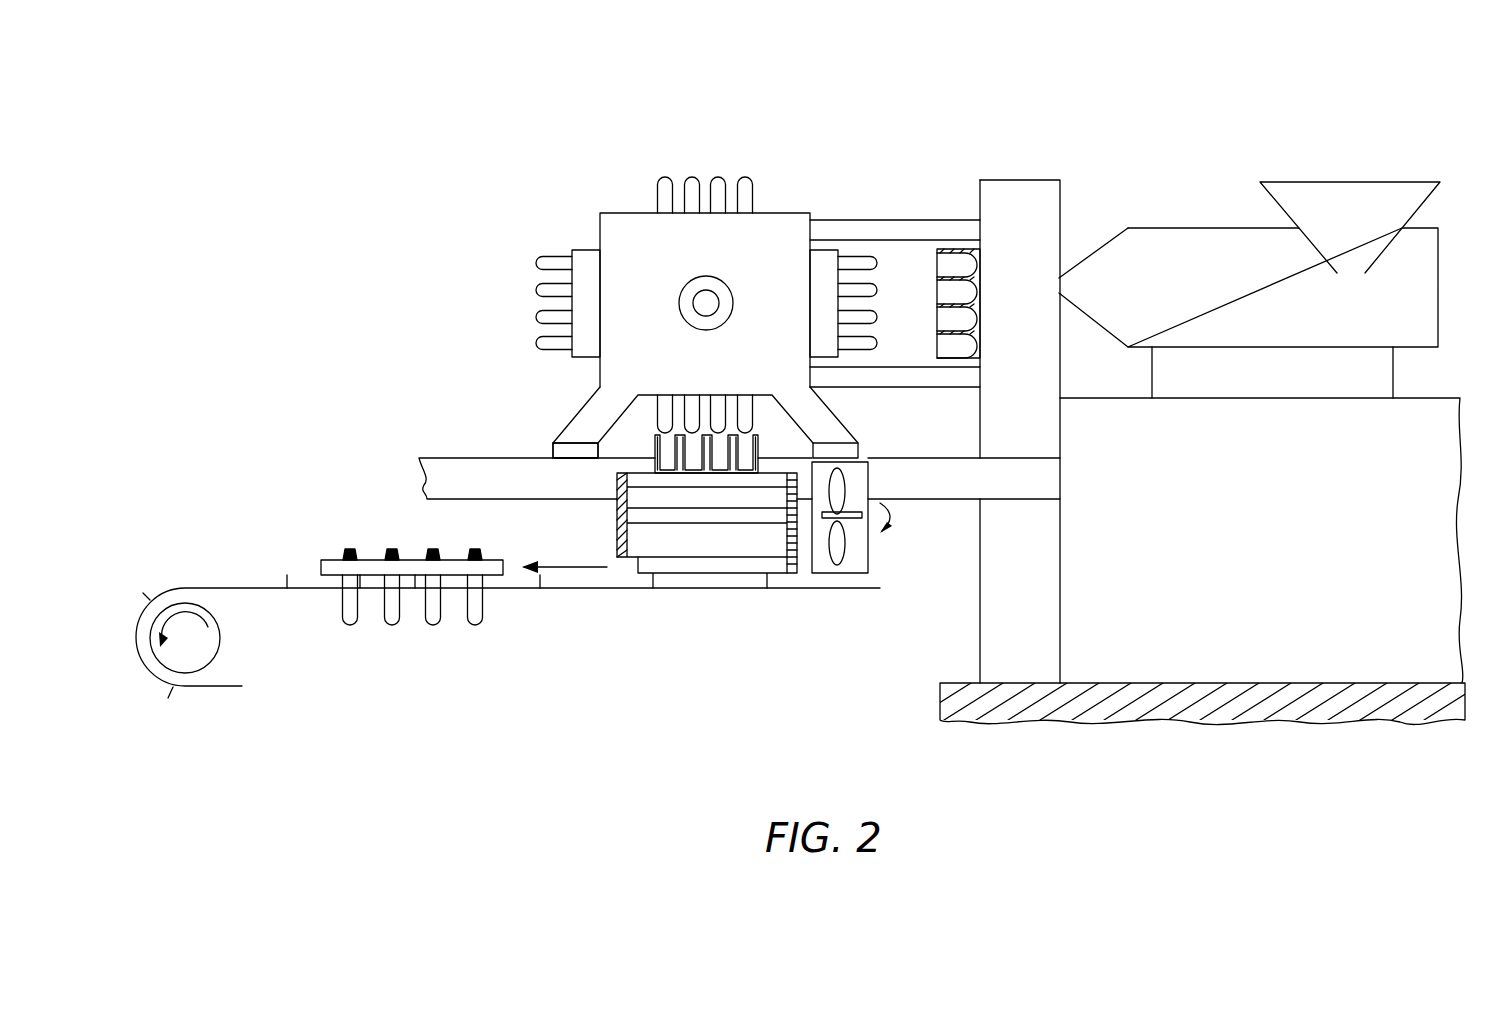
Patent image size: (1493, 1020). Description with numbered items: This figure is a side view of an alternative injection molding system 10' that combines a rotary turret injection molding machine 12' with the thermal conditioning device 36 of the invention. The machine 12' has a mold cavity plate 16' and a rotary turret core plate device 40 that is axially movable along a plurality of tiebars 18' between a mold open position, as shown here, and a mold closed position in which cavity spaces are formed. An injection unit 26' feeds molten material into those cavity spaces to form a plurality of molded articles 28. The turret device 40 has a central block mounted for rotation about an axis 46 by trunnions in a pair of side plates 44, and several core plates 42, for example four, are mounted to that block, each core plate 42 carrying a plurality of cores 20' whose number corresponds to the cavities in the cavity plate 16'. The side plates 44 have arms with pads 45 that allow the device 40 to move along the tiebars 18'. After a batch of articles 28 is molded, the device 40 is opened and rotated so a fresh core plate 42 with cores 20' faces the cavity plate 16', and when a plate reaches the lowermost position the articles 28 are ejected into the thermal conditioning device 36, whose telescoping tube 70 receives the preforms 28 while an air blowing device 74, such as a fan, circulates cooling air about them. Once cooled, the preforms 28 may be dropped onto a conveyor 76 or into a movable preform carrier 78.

The injection molding system 10' is at (739, 267).
The injection molding machine 12' is at (1181, 452).
The mold cavity plate 16' is at (949, 258).
The tiebars 18' is at (895, 273).
The cores 20' is at (690, 302).
The injection unit 26' is at (1249, 279).
The molded articles 28 is at (350, 552).
The thermal conditioning device 36 is at (768, 552).
The rotary turret core plate device 40 is at (640, 232).
The core plates 42 is at (583, 258).
The side plates 44 is at (759, 377).
The pads 45 is at (555, 452).
The axis 46 is at (707, 303).
The telescoping tube 70 is at (665, 447).
The air blowing device 74 is at (845, 545).
The conveyor 76 is at (302, 590).
The movable preform carrier 78 is at (492, 573).